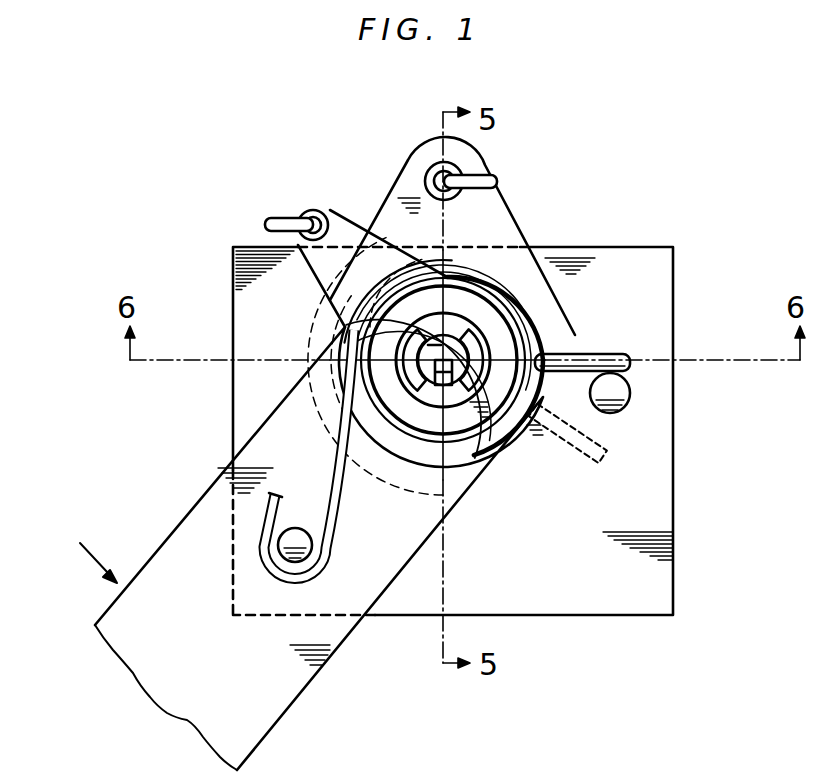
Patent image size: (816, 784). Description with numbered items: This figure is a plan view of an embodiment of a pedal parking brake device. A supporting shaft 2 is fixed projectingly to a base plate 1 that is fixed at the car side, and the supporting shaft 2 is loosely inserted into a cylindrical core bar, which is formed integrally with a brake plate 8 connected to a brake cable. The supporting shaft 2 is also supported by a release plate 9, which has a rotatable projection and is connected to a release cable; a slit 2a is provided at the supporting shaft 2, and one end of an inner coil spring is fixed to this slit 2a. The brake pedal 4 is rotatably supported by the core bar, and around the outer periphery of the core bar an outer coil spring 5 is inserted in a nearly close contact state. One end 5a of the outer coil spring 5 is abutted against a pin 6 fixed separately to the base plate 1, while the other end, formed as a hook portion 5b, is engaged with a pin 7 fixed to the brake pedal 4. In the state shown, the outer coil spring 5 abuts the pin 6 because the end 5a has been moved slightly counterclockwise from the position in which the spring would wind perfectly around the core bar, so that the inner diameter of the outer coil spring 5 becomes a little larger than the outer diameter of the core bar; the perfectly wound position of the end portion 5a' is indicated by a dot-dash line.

The base plate 1 is at (666, 284).
The supporting shaft 2 is at (487, 320).
The slit 2a is at (440, 387).
The brake pedal 4 is at (283, 697).
The outer coil spring 5 is at (486, 457).
The one end of the outer coil spring 5a is at (637, 342).
The end portion position where the outer coil spring winds around the core bar perfe 5a' is at (631, 444).
The end hook portion 5b is at (297, 577).
The pin 6 is at (630, 393).
The pin 7 is at (298, 528).
The brake plate 8 is at (491, 200).
The release plate 9 is at (307, 207).